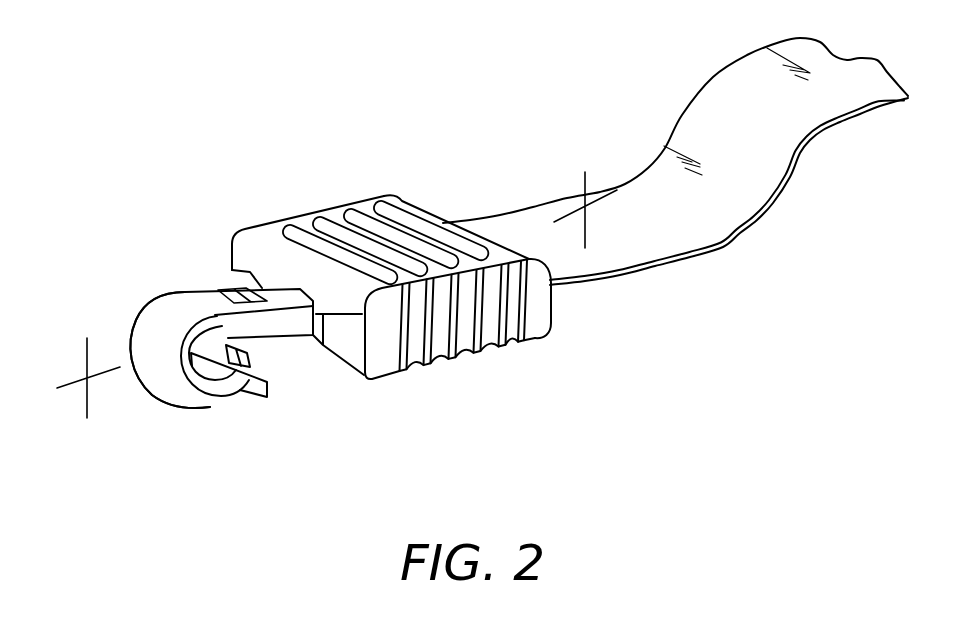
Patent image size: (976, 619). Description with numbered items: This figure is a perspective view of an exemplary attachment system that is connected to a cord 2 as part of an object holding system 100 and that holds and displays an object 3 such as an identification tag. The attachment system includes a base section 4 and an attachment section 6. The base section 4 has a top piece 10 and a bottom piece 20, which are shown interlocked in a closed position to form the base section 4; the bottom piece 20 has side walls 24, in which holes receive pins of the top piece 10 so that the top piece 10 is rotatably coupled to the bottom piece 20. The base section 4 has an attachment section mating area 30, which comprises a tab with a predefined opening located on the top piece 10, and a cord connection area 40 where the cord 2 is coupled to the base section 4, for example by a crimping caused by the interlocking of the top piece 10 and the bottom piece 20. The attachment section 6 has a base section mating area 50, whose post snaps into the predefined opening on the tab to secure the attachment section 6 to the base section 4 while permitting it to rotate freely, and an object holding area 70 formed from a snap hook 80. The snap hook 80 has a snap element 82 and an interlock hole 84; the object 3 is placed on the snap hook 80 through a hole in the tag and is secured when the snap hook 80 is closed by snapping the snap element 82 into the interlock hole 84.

The object holding system 100 is at (284, 114).
The cord 2 is at (723, 85).
The object 3 is at (97, 387).
The base section 4 is at (291, 218).
The attachment section 6 is at (180, 300).
The top piece 10 is at (300, 256).
The bottom piece 20 is at (387, 370).
The side wall 24 is at (517, 326).
The attachment section mating area 30 is at (316, 355).
The cord connection area 40 is at (541, 314).
The base section mating area 50 is at (275, 288).
The object holding area 70 is at (201, 381).
The snap hook 80 is at (149, 330).
The snap element 82 is at (238, 374).
The interlock hole 84 is at (227, 287).